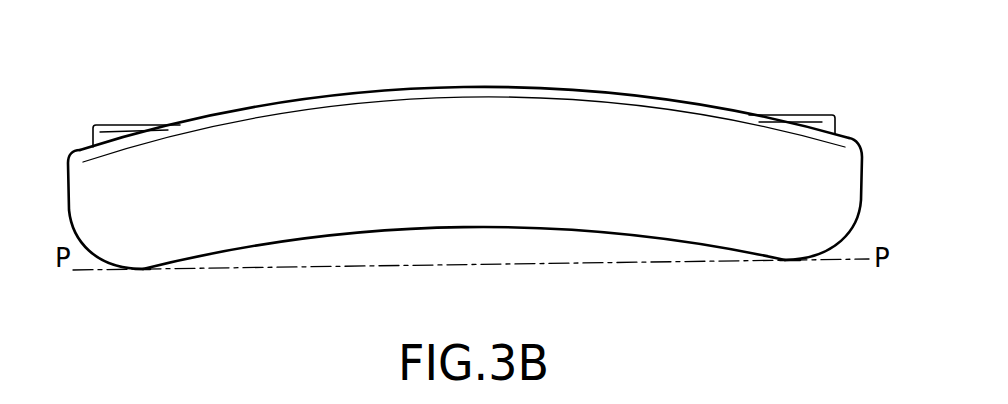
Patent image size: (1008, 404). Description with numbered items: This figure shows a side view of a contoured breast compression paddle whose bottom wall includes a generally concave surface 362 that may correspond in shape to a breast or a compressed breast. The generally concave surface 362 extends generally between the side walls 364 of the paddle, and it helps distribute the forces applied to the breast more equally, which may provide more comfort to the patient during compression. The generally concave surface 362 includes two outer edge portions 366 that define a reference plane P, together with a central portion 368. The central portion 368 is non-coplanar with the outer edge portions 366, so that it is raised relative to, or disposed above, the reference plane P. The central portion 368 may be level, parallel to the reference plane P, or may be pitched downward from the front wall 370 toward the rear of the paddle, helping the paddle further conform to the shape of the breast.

The generally concave surface 362 is at (563, 230).
The side walls 364 is at (80, 182).
The outer edge portions 366 is at (151, 282).
The central portion 368 is at (483, 217).
The front wall 370 is at (649, 122).